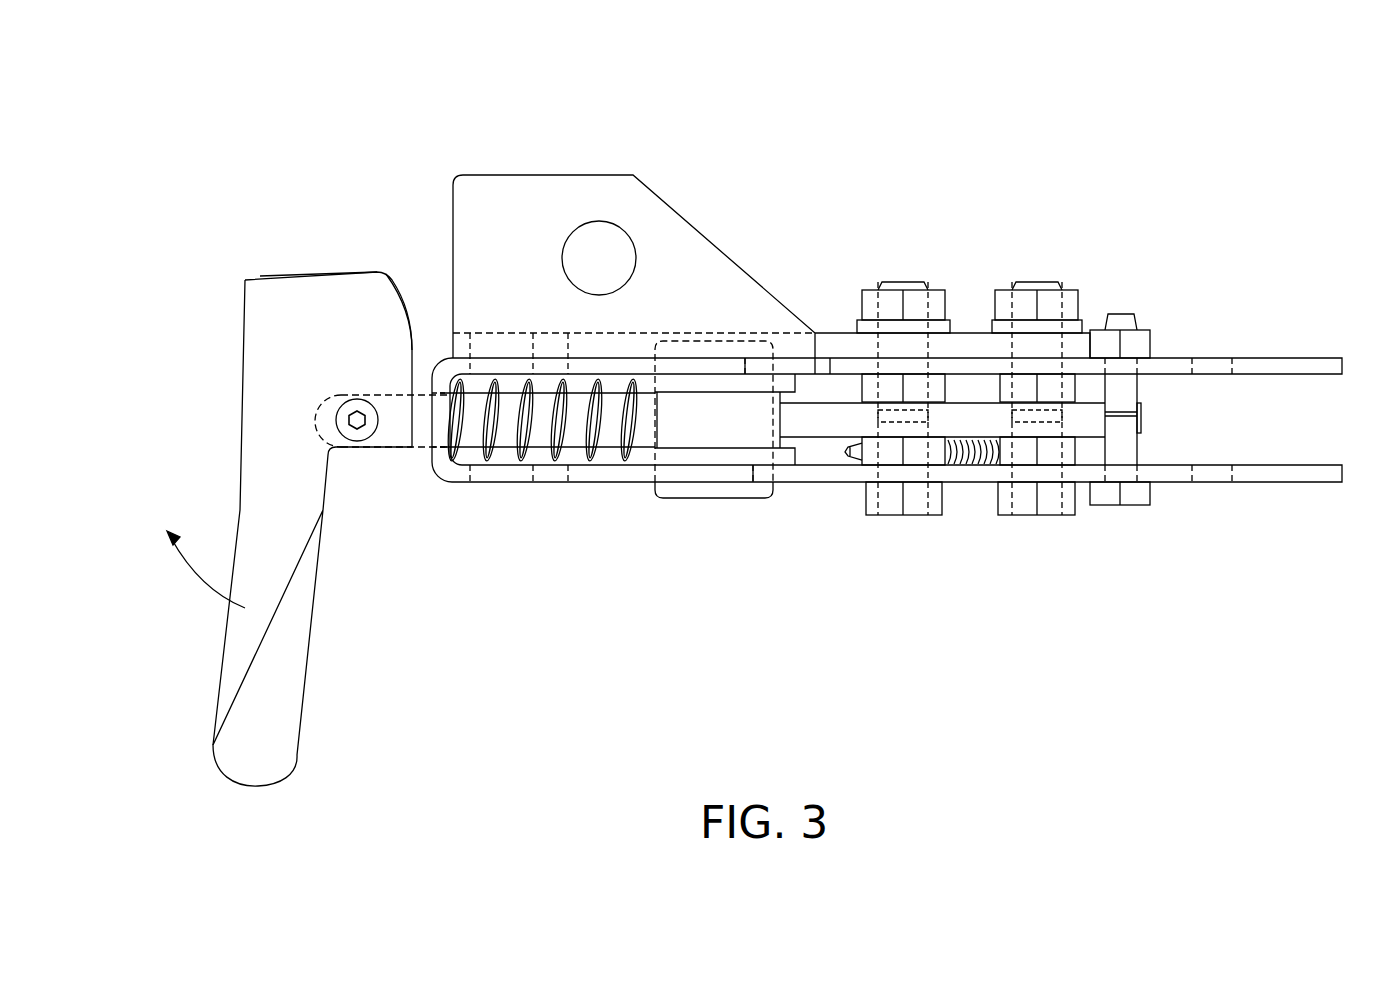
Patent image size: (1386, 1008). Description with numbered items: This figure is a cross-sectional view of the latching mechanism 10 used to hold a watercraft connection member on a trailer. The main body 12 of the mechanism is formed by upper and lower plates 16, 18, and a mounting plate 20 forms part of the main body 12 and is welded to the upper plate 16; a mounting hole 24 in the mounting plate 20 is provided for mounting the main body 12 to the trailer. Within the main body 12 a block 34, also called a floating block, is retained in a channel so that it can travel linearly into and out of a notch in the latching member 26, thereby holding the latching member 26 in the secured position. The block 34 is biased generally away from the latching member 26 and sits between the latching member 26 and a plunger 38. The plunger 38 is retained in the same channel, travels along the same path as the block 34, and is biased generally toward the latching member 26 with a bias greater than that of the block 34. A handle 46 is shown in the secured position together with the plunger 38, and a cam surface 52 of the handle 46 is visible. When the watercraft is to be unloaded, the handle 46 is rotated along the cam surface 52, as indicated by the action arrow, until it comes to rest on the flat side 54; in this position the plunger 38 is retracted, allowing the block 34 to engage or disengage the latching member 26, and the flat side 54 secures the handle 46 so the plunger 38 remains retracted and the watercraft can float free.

The latching mechanism 10 is at (892, 121).
The main body 12 is at (1268, 338).
The upper plate 16 is at (1328, 358).
The lower plate 18 is at (1302, 482).
The mounting plate 20 is at (702, 232).
The mounting hole 24 is at (598, 222).
The latching member 26 is at (1143, 418).
The block 34 is at (737, 432).
The plunger 38 is at (423, 438).
The handle 46 is at (245, 362).
The cam surface 52 is at (397, 290).
The side 54 is at (298, 277).